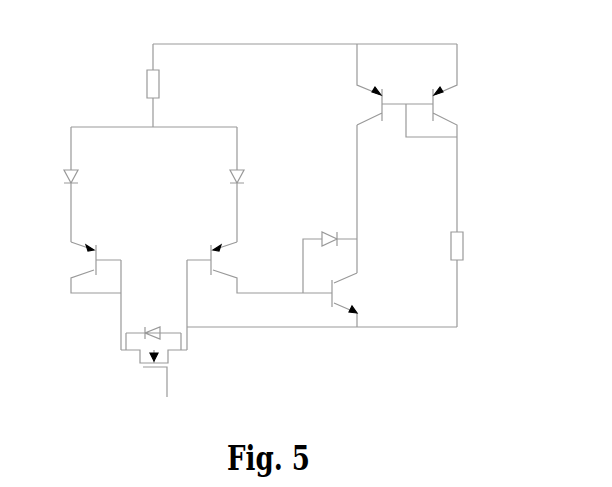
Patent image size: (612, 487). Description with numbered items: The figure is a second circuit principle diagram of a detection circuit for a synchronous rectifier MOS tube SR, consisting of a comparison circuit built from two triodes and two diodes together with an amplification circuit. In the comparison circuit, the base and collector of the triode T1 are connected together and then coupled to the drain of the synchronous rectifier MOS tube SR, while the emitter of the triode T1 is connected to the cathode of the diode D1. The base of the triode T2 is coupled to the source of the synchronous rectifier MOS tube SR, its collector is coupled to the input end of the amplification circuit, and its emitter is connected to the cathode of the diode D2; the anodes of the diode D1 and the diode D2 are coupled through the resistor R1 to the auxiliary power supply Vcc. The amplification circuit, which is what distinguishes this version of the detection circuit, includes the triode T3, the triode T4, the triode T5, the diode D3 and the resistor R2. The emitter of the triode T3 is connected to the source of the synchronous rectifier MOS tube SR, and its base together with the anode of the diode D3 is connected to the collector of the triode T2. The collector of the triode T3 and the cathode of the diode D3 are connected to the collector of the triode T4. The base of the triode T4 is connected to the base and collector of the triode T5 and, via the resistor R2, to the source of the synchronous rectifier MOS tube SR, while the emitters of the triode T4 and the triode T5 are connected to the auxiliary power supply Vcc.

The auxiliary power supply Vcc is at (305, 28).
The resistor R1 is at (141, 85).
The resistor R2 is at (442, 279).
The diode D1 is at (58, 184).
The diode D2 is at (250, 184).
The diode D3 is at (330, 247).
The triode T1 is at (84, 295).
The triode T2 is at (259, 296).
The triode T3 is at (357, 226).
The triode T4 is at (384, 84).
The triode T5 is at (442, 138).
The synchronous rectifier MOS tube SR is at (154, 349).